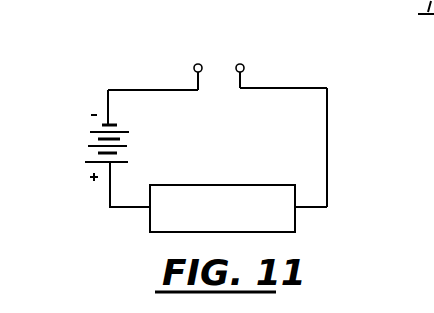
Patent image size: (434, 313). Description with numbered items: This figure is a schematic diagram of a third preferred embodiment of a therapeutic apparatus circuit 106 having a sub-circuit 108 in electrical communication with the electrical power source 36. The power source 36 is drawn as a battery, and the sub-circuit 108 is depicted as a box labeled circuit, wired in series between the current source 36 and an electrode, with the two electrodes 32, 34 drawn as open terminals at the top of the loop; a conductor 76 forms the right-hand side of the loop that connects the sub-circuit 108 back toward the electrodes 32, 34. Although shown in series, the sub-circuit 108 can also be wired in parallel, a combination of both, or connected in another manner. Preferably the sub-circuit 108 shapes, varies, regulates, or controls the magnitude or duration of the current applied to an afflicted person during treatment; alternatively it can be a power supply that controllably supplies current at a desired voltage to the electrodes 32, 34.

The electrode 32 is at (198, 63).
The electrode 34 is at (243, 63).
The electrical power source 36 is at (90, 138).
The conductor 76 is at (329, 125).
The therapeutic apparatus circuit 106 is at (329, 83).
The sub-circuit 108 is at (262, 140).